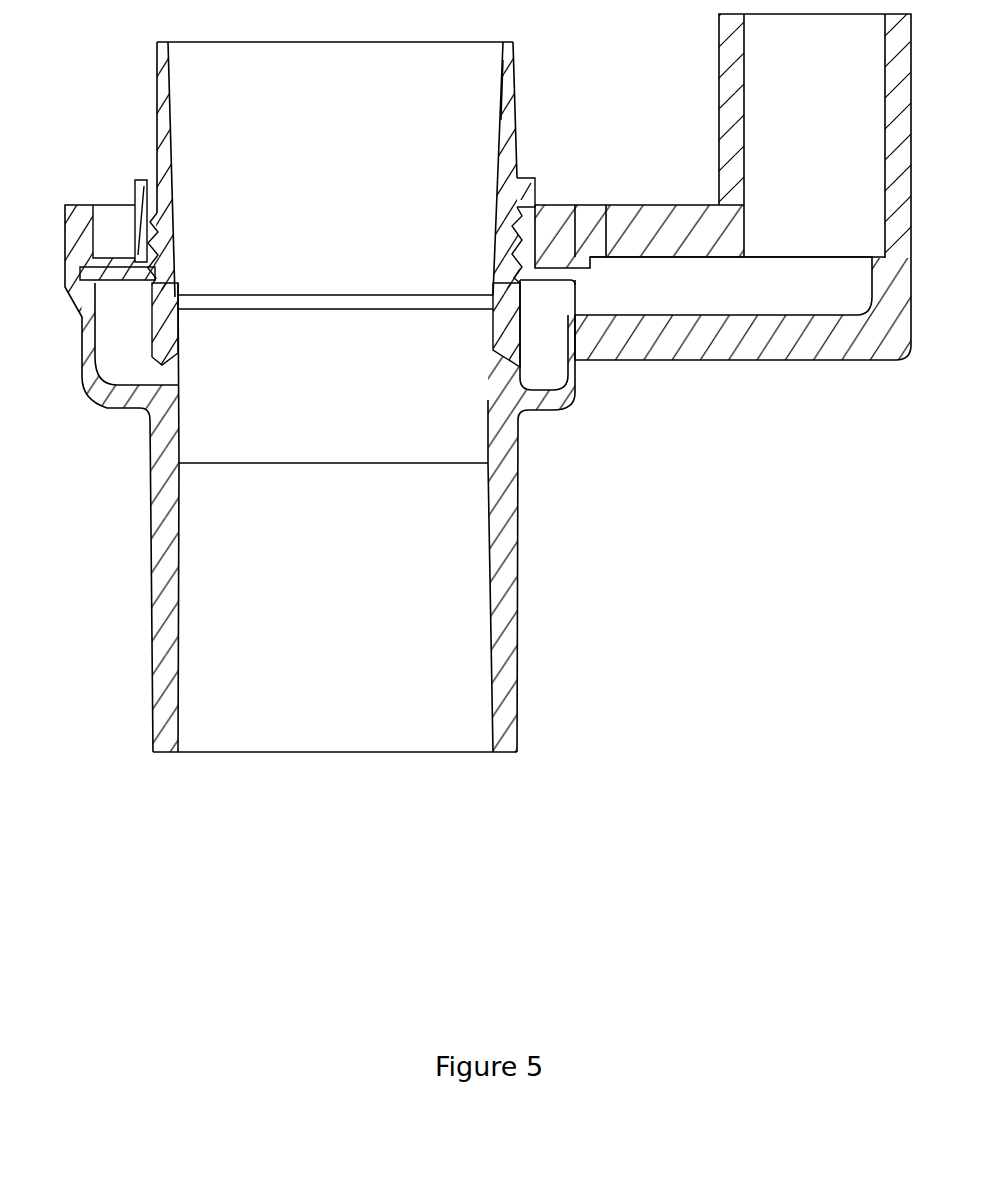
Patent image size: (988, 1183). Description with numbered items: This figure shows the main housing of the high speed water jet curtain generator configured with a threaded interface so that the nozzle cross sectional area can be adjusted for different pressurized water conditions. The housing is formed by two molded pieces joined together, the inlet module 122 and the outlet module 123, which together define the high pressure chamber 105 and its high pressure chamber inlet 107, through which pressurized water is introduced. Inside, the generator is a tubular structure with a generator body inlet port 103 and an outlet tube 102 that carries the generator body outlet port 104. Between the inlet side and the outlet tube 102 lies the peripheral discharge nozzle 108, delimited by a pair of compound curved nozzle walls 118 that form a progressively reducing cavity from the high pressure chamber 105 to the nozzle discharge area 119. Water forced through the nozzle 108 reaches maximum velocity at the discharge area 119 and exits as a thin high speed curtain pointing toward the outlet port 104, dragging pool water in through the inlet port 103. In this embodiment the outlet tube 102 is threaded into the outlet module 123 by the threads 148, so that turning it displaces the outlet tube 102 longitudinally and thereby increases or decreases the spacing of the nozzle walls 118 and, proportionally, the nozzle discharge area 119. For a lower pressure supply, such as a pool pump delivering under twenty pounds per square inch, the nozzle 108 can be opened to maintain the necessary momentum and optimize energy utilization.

The outlet tube 102 is at (503, 90).
The generator body inlet port 103 is at (319, 671).
The generator body outlet port 104 is at (301, 111).
The high pressure chamber 105 is at (641, 301).
The high pressure chamber inlet 107 is at (797, 101).
The peripheral discharge nozzle 108 is at (177, 353).
The nozzle walls 118 is at (520, 347).
The nozzle discharge area 119 is at (331, 300).
The inlet module 122 is at (500, 491).
The outlet module 123 is at (645, 227).
The threads 148 is at (514, 232).